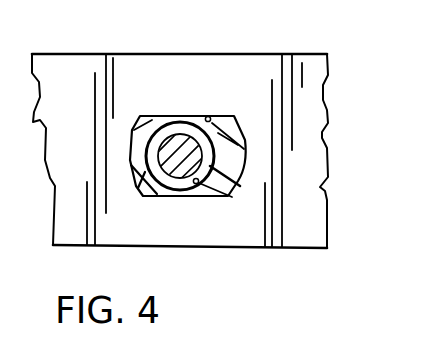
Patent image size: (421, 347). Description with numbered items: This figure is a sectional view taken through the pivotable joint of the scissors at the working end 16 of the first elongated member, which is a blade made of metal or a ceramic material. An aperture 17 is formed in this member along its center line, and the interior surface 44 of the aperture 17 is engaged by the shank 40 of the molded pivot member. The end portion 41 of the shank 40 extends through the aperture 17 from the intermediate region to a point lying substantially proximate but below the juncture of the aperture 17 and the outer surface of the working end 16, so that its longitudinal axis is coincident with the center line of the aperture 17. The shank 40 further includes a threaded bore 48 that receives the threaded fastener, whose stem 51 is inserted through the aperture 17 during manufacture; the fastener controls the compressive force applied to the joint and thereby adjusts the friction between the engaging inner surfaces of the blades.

The working end 16 is at (302, 73).
The aperture 17 is at (233, 134).
The shank 40 is at (233, 163).
The end portion 41 is at (157, 125).
The interior surface 44 is at (208, 116).
The threaded bore 48 is at (205, 170).
The stem 51 is at (213, 181).